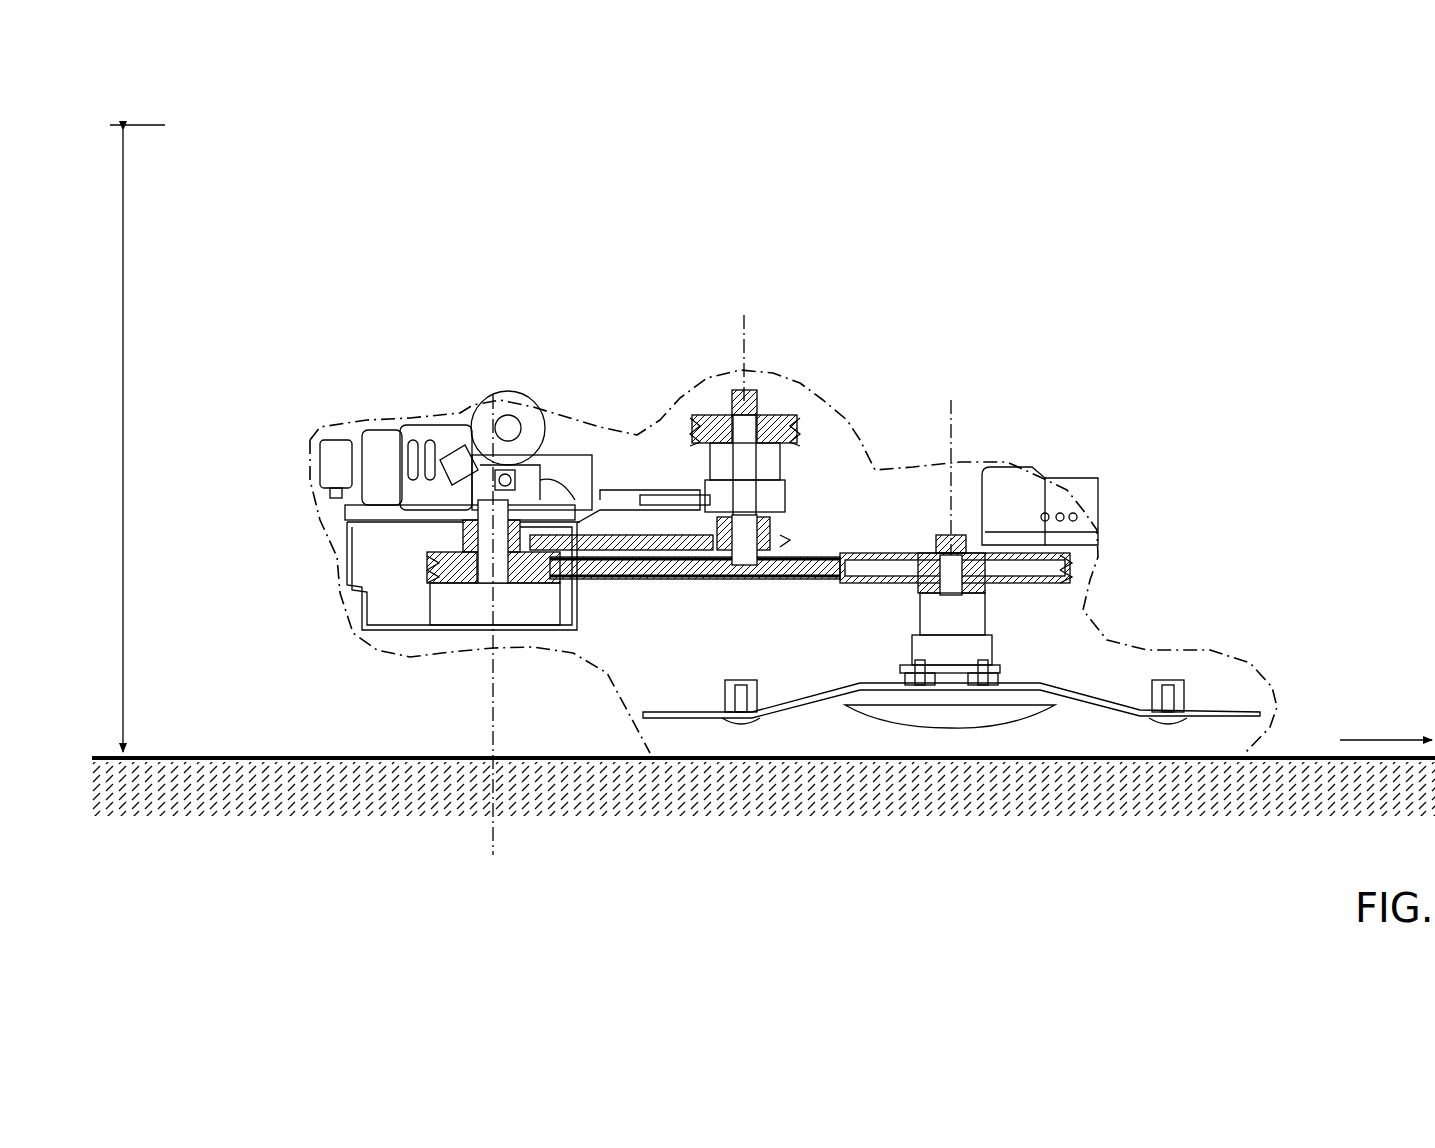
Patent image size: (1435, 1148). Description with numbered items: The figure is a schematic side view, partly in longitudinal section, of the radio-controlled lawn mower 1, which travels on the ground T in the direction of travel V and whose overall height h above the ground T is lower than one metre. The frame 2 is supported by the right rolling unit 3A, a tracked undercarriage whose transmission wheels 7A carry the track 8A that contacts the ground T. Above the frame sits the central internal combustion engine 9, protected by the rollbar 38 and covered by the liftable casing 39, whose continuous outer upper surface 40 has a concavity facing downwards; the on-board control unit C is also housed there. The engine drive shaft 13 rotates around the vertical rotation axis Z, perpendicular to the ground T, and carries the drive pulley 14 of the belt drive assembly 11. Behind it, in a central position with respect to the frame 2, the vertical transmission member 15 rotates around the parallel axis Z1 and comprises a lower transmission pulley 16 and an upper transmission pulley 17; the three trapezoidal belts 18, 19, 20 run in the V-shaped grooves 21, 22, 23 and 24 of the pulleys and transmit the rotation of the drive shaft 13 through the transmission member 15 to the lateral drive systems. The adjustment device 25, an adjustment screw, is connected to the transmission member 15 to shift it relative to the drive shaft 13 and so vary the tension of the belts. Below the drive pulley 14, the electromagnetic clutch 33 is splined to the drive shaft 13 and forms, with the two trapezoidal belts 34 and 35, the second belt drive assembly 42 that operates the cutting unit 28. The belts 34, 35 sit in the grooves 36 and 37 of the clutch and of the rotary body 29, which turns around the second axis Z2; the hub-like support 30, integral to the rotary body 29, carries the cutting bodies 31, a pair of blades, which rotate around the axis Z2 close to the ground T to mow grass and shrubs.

The radio-controlled lawn mower 1 is at (1043, 220).
The frame 2 is at (212, 560).
The right rolling unit 3A is at (232, 711).
The transmission wheels 7A is at (487, 710).
The track 8A is at (205, 675).
The internal combustion engine 9 is at (492, 420).
The belt drive assembly 11 is at (642, 600).
The drive shaft 13 is at (502, 567).
The drive pulley 14 is at (450, 533).
The transmission member 15 is at (768, 410).
The lower transmission pulley 16 is at (773, 537).
The upper transmission pulley 17 is at (775, 445).
The belt 18 is at (612, 508).
The belt 19 is at (800, 432).
The belt 20 is at (785, 410).
The groove 21 is at (520, 540).
The groove 22 is at (708, 560).
The groove 23 is at (703, 437).
The groove 24 is at (707, 415).
The adjustment device 25 is at (672, 498).
The cutting unit 28 is at (978, 745).
The rotary body 29 is at (900, 574).
The support 30 is at (977, 618).
The cutting bodies 31 is at (668, 720).
The electromagnetic clutch 33 is at (435, 565).
The belt 34 is at (843, 552).
The belt 35 is at (850, 572).
The groove 36 is at (1067, 558).
The groove 37 is at (1067, 572).
The rollbar 38 is at (177, 133).
The liftable casing 39 is at (617, 150).
The outer upper surface 40 is at (760, 180).
The belt drive assembly 42 is at (742, 595).
The control unit C is at (1040, 497).
The ground T is at (105, 755).
The direction of travel V is at (1385, 726).
The height h is at (132, 438).
The rotation axis Z is at (485, 832).
The rotation axis Z1 is at (742, 318).
The rotation axis Z2 is at (955, 440).